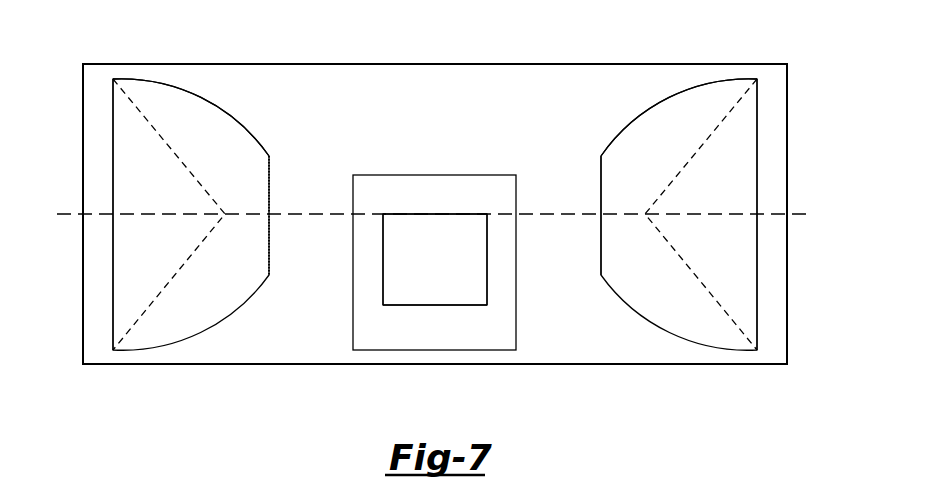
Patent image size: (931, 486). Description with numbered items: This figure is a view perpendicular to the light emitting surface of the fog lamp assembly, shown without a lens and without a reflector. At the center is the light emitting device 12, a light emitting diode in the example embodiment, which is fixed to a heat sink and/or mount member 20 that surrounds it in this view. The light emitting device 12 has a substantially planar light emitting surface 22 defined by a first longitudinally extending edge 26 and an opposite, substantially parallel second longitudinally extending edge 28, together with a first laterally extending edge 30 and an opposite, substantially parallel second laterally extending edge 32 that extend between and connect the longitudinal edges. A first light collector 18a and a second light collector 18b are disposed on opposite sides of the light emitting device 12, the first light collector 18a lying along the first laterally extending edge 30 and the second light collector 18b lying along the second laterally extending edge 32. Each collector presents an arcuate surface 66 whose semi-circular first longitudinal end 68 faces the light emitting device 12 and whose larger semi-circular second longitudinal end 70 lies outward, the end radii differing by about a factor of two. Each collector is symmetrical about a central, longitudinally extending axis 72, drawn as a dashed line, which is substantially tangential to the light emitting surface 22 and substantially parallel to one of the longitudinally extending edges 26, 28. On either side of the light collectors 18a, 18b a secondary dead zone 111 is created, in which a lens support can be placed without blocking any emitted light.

The mount member 20 is at (436, 64).
The light emitting device 12 is at (459, 175).
The light emitting surface 22 is at (443, 270).
The first longitudinally extending edge 26 is at (435, 214).
The second longitudinally extending edge 28 is at (435, 305).
The first laterally extending edge 30 is at (383, 292).
The second laterally extending edge 32 is at (487, 282).
The first light collector 18a is at (222, 110).
The second light collector 18b is at (650, 110).
The arcuate surface 66 is at (225, 160).
The first longitudinal end 68 is at (270, 168).
The second longitudinal end 70 is at (113, 138).
The axis 72 is at (300, 218).
The secondary dead zone 111 is at (97, 289).